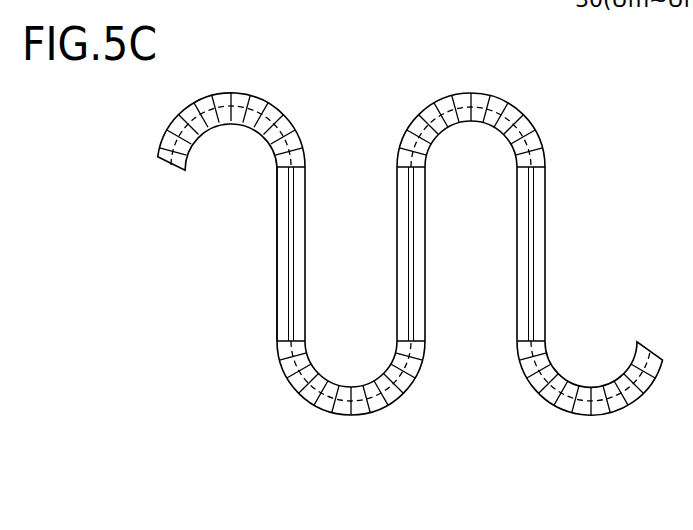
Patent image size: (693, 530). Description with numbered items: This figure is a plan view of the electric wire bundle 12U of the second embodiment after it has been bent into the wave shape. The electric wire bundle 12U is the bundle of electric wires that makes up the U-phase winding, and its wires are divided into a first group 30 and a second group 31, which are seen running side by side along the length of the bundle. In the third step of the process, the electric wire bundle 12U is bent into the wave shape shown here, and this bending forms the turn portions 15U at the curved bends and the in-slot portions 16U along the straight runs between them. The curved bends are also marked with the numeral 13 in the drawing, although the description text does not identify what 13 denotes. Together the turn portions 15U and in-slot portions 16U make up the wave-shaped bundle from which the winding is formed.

The curved portion 13 is at (233, 93).
The electric wire bundle 12U is at (284, 108).
The turn portions 15U is at (520, 118).
The in-slot portions 16U is at (545, 260).
The first group 30 is at (305, 252).
The second group 31 is at (277, 254).